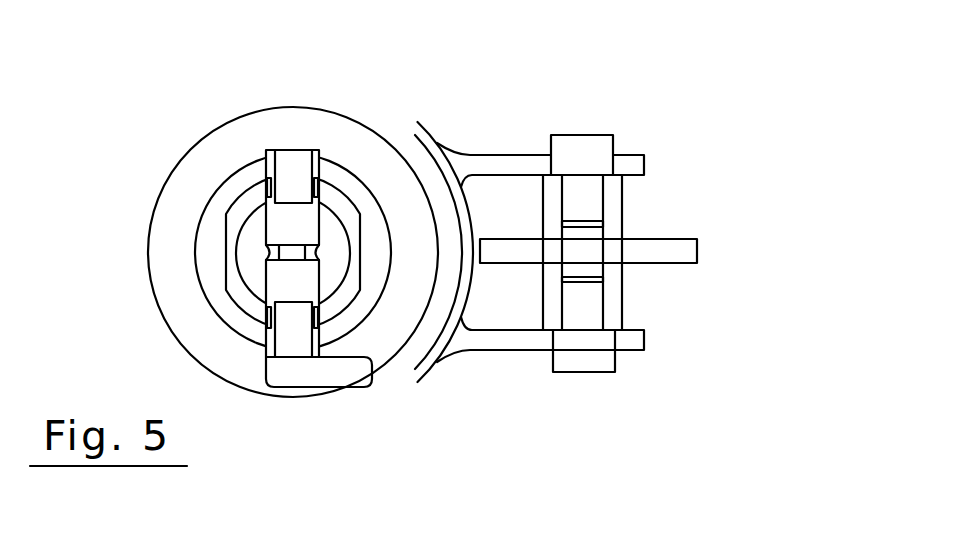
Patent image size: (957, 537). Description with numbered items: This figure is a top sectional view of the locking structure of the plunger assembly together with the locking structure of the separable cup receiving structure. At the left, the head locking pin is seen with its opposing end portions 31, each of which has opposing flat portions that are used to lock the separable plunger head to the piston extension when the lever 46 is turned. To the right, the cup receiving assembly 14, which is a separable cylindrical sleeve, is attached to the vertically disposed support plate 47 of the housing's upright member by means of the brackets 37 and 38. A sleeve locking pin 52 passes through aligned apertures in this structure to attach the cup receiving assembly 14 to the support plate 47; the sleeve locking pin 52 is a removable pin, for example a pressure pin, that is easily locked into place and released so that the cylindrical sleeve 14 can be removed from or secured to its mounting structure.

The cup receiving assembly 14 is at (415, 135).
The end portion 31 is at (300, 152).
The bracket 37 is at (511, 165).
The bracket 38 is at (519, 342).
The lever 46 is at (323, 373).
The support plate 47 is at (633, 250).
The sleeve locking pin 52 is at (589, 362).